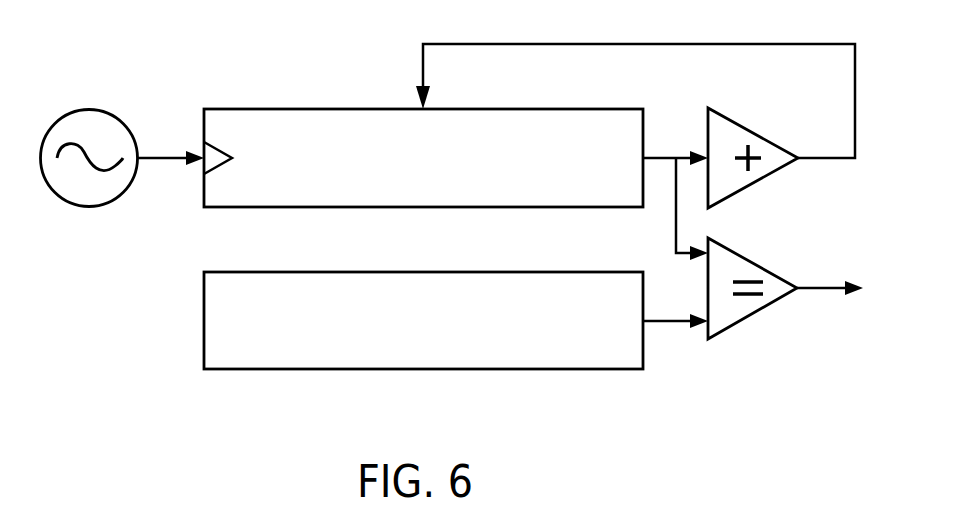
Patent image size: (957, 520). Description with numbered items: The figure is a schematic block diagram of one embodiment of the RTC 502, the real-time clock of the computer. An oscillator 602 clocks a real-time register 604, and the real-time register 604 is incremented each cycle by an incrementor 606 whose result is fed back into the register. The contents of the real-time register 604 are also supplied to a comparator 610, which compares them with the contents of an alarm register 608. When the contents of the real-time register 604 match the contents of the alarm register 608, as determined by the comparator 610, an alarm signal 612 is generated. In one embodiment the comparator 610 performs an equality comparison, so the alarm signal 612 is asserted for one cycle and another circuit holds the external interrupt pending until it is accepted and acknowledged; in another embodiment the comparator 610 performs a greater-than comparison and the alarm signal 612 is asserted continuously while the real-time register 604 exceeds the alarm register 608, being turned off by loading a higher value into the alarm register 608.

The RTC 502 is at (128, 56).
The oscillator 602 is at (125, 125).
The real-time register 604 is at (265, 108).
The incrementor 606 is at (727, 112).
The alarm register 608 is at (264, 271).
The comparator 610 is at (731, 247).
The alarm signal 612 is at (822, 288).